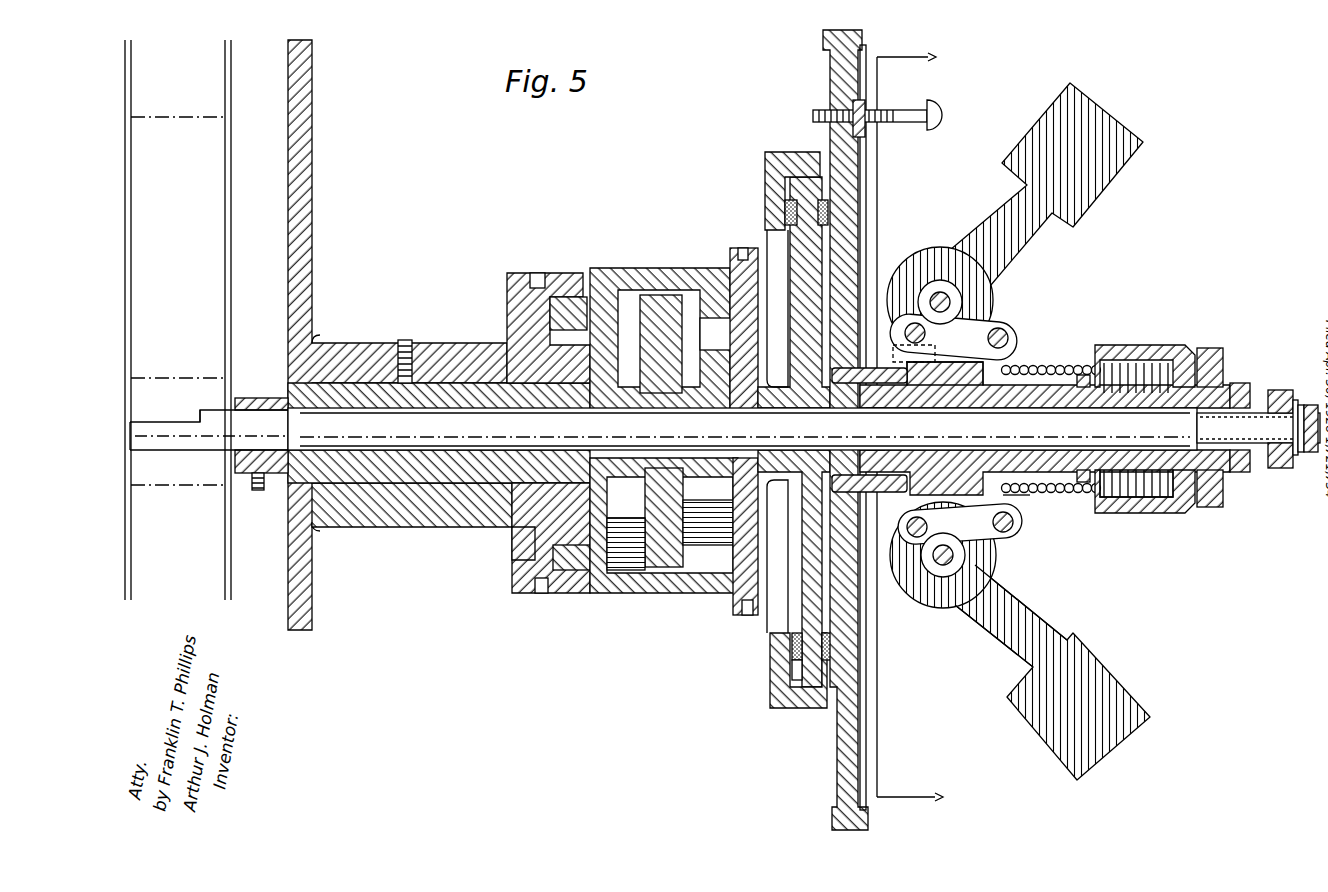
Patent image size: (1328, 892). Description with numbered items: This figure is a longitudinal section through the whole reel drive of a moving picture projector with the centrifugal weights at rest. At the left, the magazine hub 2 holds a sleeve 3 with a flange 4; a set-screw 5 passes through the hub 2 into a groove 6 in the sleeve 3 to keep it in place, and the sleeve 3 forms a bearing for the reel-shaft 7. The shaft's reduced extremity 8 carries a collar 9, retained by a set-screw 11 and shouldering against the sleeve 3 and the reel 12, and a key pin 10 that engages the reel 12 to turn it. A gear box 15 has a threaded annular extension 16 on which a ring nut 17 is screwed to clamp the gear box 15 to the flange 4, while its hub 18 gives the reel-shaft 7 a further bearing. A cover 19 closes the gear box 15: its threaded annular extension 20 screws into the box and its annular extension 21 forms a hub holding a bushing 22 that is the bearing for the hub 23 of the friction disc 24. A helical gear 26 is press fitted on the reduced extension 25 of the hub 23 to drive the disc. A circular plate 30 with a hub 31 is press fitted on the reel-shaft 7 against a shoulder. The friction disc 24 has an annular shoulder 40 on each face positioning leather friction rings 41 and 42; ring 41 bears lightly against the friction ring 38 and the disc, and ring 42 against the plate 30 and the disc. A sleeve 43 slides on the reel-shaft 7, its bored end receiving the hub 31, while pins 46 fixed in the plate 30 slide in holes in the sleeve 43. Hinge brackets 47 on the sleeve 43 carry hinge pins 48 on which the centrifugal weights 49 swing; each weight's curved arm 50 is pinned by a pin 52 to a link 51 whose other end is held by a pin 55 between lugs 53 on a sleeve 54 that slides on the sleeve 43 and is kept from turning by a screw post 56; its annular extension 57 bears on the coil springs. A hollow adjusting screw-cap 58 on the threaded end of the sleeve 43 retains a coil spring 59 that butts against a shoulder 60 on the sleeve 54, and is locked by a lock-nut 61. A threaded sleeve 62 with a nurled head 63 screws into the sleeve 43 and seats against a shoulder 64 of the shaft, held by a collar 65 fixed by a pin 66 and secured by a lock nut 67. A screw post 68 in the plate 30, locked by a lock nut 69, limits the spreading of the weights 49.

The hub 2 is at (366, 520).
The sleeve 3 is at (470, 478).
The flange 4 is at (512, 522).
The set-screw 5 is at (412, 345).
The groove 6 is at (408, 482).
The reel-shaft 7 is at (335, 432).
The extremity of reel-shaft 8 is at (161, 422).
The collar 9 is at (262, 398).
The key pin 10 is at (202, 416).
The set-screw 11 is at (258, 490).
The reel 12 is at (218, 566).
The gear box 15 is at (624, 276).
The annular extension 16 is at (570, 298).
The ring nut 17 is at (516, 286).
The hub of gear box 18 is at (522, 522).
The cover 19 is at (738, 266).
The annular extension 20 is at (717, 310).
The annular extension 21 is at (705, 355).
The bushing 22 is at (802, 500).
The hub of friction disc 23 is at (704, 478).
The friction disc 24 is at (798, 600).
The extension of hub 25 is at (647, 510).
The helical gear 26 is at (660, 520).
The circular plate 30 is at (842, 730).
The hub of plate 31 is at (880, 463).
The friction ring 38 is at (770, 165).
The annular shoulder 40 is at (793, 645).
The leather friction ring 41 is at (798, 668).
The leather friction ring 42 is at (830, 648).
The sleeve 43 is at (1062, 480).
The pin 46 is at (868, 474).
The hinge bracket 47 is at (955, 300).
The hinge pin 48 is at (975, 322).
The centrifugal weight 49 is at (1105, 172).
The curved arm 50 is at (925, 266).
The link 51 is at (908, 520).
The pin 52 is at (908, 365).
The lug 53 is at (1008, 340).
The sleeve 54 is at (1090, 497).
The pin 55 is at (1005, 335).
The screw post 56 is at (1082, 374).
The annular extension 57 is at (1003, 590).
The adjusting screw-cap 58 is at (1175, 345).
The coil spring 59 is at (1136, 360).
The shoulder 60 is at (1020, 500).
The lock-nut 61 is at (1222, 362).
The threaded sleeve 62 is at (1272, 468).
The nurled head 63 is at (1296, 460).
The shoulder 64 is at (1215, 458).
The collar 65 is at (1300, 404).
The pin 66 is at (1311, 404).
The lock nut 67 is at (1242, 384).
The screw post 68 is at (888, 122).
The lock nut 69 is at (866, 105).